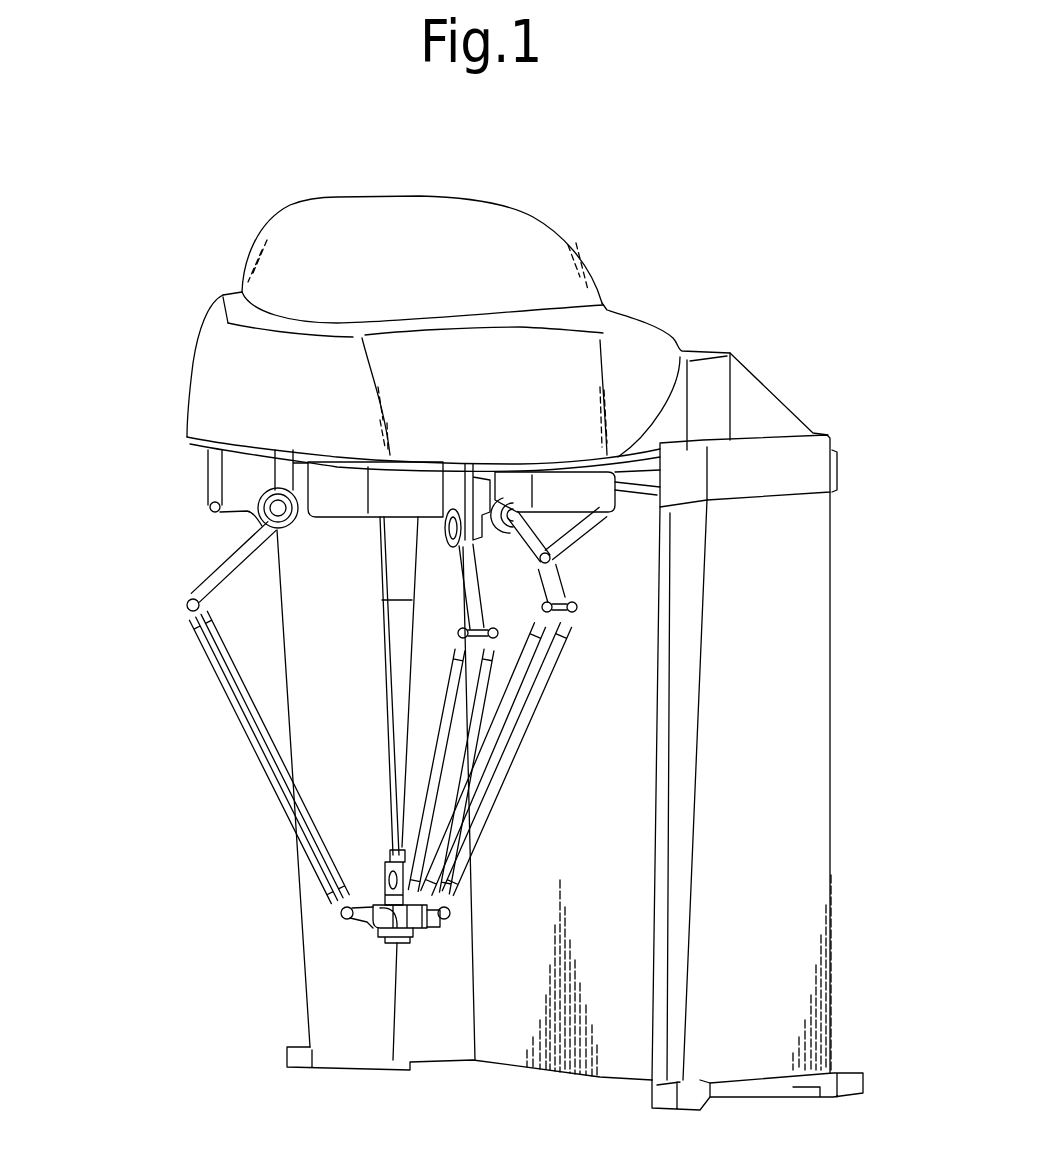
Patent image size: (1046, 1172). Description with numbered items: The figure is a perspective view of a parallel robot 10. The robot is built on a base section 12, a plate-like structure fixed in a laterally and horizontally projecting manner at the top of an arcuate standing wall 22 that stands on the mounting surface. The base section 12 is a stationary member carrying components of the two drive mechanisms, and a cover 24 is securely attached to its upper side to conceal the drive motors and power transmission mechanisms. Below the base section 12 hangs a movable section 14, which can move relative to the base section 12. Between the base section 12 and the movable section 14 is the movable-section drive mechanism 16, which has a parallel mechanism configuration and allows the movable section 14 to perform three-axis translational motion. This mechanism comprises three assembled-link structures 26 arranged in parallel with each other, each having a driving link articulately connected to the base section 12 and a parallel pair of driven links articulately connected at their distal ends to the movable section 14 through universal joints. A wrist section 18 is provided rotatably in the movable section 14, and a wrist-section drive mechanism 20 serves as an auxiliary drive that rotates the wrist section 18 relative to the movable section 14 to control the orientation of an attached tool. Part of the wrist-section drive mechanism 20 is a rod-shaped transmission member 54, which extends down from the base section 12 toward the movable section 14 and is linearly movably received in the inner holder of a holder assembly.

The parallel robot 10 is at (542, 318).
The base section 12 is at (380, 498).
The movable section 14 is at (328, 956).
The movable-section drive mechanism 16 is at (193, 672).
The wrist section 18 is at (427, 1028).
The wrist-section drive mechanism 20 is at (379, 681).
The arcuate standing wall 22 is at (596, 772).
The cover 24 is at (425, 240).
The assembled-link structures 26 is at (397, 760).
The rod-shaped transmission member 54 is at (323, 751).